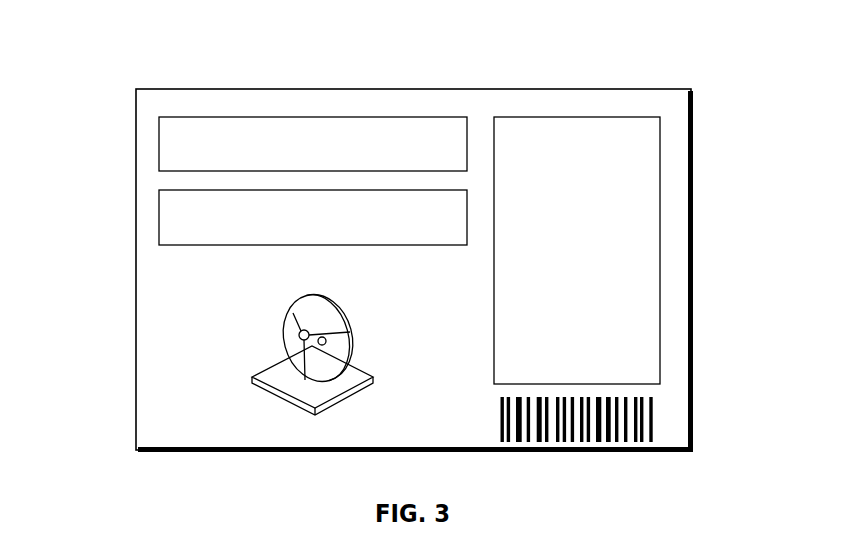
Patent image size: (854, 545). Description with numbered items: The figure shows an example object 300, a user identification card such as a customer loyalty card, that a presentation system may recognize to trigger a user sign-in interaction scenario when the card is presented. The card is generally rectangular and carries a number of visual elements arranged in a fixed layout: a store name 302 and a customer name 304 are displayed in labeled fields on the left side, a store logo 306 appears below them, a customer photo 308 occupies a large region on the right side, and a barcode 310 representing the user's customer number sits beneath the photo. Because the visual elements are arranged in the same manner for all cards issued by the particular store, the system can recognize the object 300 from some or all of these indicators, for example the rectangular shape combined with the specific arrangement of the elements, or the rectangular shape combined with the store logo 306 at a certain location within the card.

The object 300 is at (218, 89).
The store name 302 is at (159, 148).
The customer name 304 is at (159, 215).
The store logo 306 is at (262, 372).
The customer photo 308 is at (660, 167).
The barcode 310 is at (653, 421).